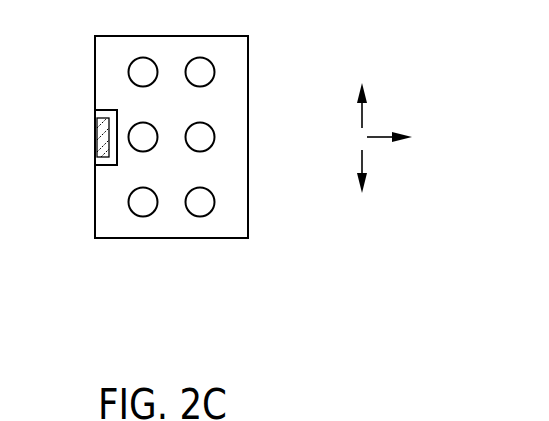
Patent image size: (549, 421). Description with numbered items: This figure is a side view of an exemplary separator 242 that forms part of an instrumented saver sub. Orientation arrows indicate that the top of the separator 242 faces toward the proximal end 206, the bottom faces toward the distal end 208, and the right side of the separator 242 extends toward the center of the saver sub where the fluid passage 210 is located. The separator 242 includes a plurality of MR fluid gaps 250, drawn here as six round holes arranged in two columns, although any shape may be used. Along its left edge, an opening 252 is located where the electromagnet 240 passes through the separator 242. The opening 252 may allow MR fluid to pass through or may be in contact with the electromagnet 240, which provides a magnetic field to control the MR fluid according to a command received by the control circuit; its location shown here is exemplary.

The separator 242 is at (248, 247).
The MR fluid gaps 250 is at (215, 72).
The opening 252 is at (100, 113).
The electromagnet 240 is at (97, 145).
The proximal end 206 is at (360, 89).
The distal end 208 is at (360, 191).
The fluid passage 210 is at (408, 139).